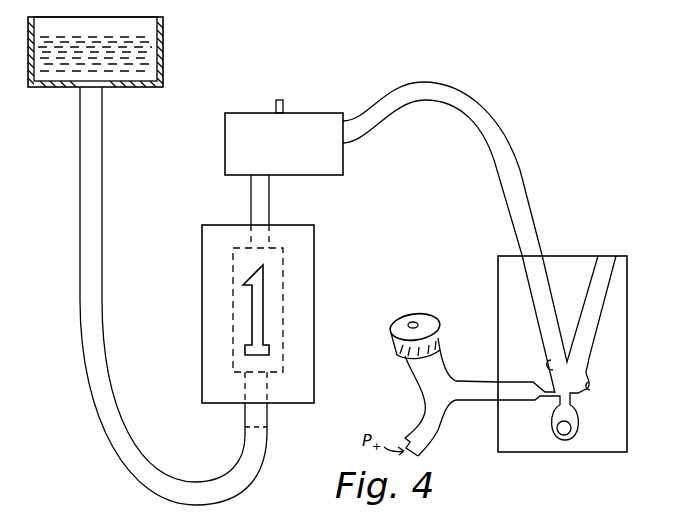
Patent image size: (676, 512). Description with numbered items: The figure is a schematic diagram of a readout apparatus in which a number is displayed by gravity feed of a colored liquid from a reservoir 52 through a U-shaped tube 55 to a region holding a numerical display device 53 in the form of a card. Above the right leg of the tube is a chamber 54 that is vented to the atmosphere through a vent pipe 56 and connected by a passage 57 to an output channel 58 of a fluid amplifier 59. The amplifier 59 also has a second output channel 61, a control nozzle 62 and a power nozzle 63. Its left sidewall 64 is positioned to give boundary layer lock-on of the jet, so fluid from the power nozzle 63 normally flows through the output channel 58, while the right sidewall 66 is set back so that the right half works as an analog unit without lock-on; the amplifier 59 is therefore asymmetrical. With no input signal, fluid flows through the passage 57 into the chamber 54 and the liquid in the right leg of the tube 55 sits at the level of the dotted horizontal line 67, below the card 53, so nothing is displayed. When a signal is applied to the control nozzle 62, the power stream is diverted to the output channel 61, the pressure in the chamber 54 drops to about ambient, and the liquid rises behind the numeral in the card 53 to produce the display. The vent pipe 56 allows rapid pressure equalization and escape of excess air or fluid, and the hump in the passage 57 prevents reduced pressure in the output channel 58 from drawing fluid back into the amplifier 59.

The reservoir 52 is at (163, 22).
The numerical display device 53 is at (314, 265).
The chamber 54 is at (338, 165).
The U-shaped tube 55 is at (87, 344).
The vent pipe 56 is at (281, 100).
The passage 57 is at (452, 94).
The output channel 58 is at (544, 320).
The fluid amplifier 59 is at (638, 356).
The second output channel 61 is at (598, 310).
The control nozzle 62 is at (507, 402).
The power nozzle 63 is at (568, 408).
The left sidewall 64 is at (548, 360).
The right sidewall 66 is at (590, 383).
The dotted horizontal line 67 is at (256, 427).